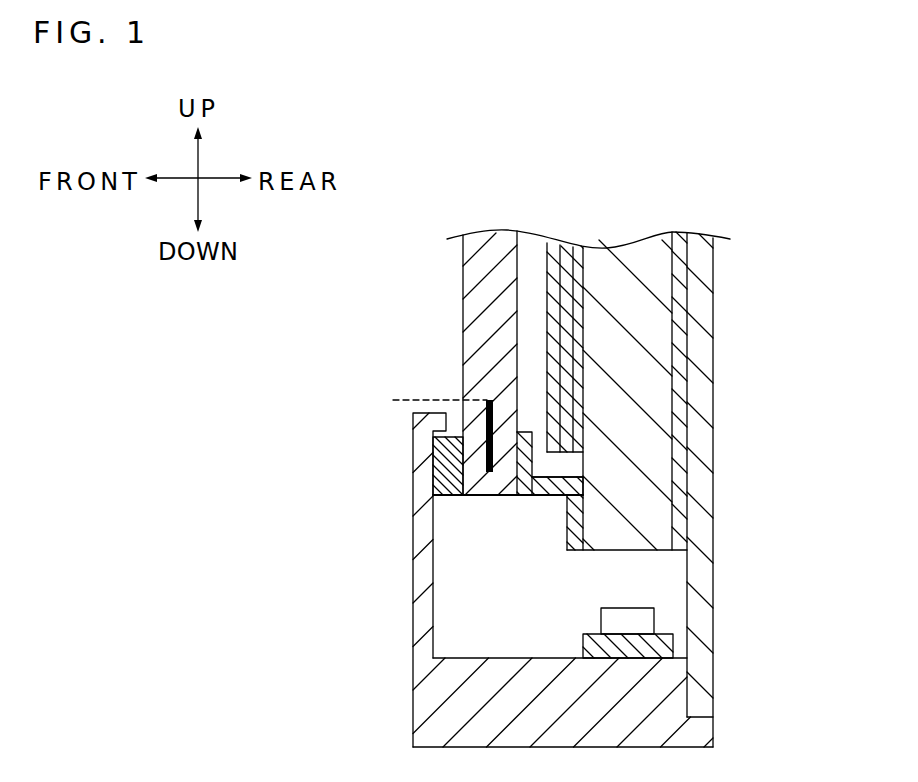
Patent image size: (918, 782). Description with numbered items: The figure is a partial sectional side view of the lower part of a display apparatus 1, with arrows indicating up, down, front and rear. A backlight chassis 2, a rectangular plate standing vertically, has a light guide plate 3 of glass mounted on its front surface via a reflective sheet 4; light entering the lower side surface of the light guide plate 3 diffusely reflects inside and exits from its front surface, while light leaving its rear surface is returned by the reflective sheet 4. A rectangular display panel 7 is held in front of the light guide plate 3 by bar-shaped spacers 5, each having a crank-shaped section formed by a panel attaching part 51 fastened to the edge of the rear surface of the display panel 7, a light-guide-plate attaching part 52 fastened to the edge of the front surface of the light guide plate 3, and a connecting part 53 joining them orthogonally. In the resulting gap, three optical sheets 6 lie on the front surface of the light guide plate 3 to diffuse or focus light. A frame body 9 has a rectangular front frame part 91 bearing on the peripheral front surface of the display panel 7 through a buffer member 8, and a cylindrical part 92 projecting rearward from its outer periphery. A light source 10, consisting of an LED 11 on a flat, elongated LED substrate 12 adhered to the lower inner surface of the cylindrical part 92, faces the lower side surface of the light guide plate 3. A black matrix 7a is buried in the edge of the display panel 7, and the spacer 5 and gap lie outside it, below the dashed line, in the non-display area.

The display apparatus 1 is at (392, 155).
The backlight chassis 2 is at (703, 390).
The light guide plate 3 is at (640, 250).
The reflective sheet 4 is at (682, 335).
The spacer 5 is at (353, 493).
The panel attaching part 51 is at (534, 466).
The light-guide-plate attaching part 52 is at (575, 523).
The connecting part 53 is at (553, 487).
The optical sheet 6 is at (565, 247).
The display panel 7 is at (470, 298).
The black matrix 7a is at (487, 448).
The buffer member 8 is at (440, 470).
The frame body 9 is at (333, 612).
The front frame part 91 is at (417, 615).
The cylindrical part 92 is at (497, 707).
The light source 10 is at (797, 597).
The LED 11 is at (645, 620).
The LED substrate 12 is at (663, 646).